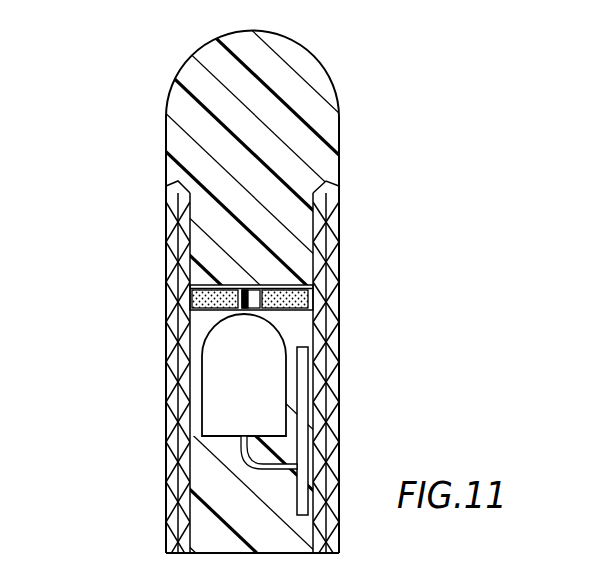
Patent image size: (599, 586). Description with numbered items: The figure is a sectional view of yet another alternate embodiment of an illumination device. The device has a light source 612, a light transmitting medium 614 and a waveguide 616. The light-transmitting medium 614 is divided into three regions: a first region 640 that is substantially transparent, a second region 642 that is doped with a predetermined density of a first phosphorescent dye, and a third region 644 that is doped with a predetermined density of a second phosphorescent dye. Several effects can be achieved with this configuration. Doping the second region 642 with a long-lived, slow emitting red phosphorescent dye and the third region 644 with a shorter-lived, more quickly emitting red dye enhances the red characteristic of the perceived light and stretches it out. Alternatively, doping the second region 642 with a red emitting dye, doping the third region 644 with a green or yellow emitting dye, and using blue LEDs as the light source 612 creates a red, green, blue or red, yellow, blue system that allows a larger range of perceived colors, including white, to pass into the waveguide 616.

The waveguide 616 is at (187, 72).
The third region 644 is at (215, 287).
The first region 640 is at (252, 285).
The second region 642 is at (310, 299).
The light source 612 is at (207, 355).
The light transmitting medium 614 is at (291, 315).